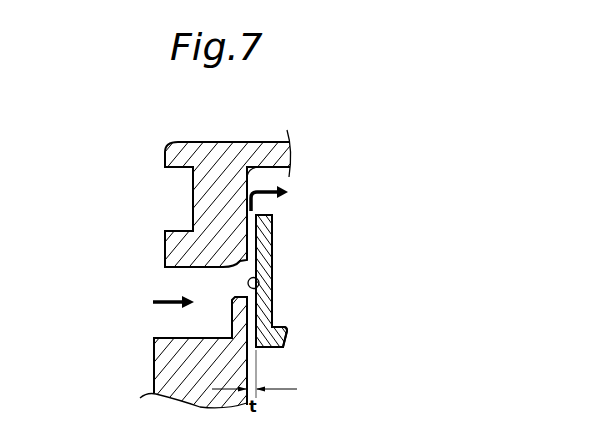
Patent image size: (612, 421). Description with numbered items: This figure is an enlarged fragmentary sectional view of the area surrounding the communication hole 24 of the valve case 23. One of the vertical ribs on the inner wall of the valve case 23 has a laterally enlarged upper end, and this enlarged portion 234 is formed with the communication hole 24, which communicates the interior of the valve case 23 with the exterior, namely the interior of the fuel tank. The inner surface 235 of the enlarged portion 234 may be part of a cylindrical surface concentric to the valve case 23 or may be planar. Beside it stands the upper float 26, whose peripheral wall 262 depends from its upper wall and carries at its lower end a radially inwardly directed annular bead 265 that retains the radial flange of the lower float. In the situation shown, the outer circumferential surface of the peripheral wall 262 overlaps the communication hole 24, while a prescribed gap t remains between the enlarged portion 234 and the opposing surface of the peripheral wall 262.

The valve case 23 is at (162, 362).
The communication hole 24 is at (240, 295).
The upper float 26 is at (266, 250).
The enlarged portion 234 is at (220, 227).
The inner surface 235 is at (255, 150).
The peripheral wall 262 is at (258, 288).
The annular bead 265 is at (287, 332).